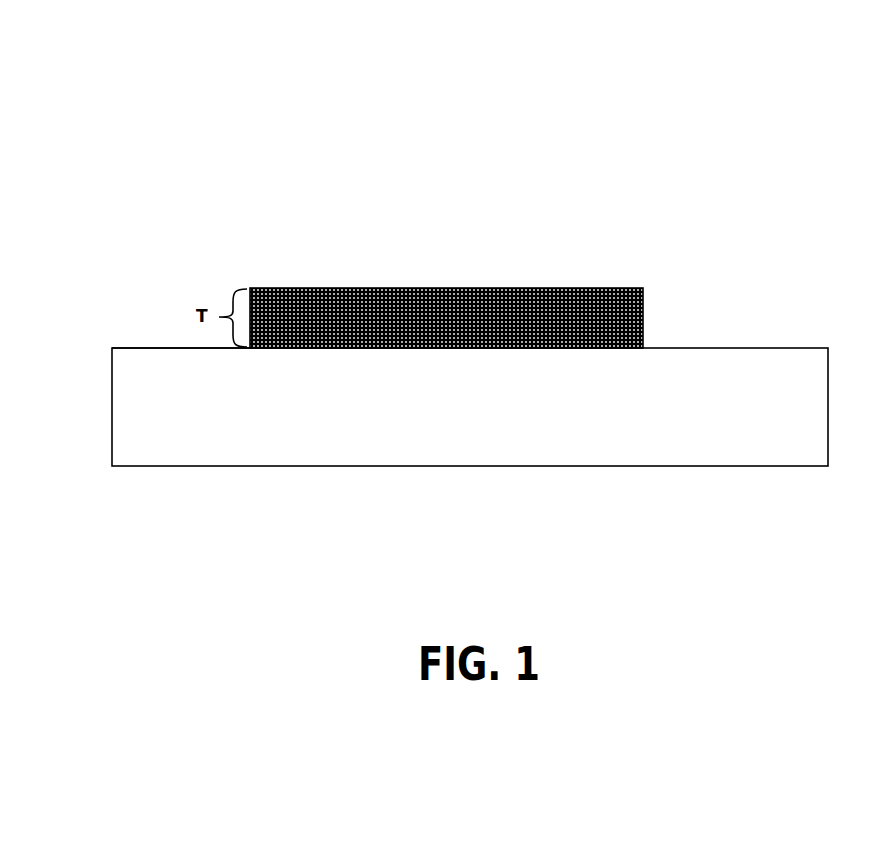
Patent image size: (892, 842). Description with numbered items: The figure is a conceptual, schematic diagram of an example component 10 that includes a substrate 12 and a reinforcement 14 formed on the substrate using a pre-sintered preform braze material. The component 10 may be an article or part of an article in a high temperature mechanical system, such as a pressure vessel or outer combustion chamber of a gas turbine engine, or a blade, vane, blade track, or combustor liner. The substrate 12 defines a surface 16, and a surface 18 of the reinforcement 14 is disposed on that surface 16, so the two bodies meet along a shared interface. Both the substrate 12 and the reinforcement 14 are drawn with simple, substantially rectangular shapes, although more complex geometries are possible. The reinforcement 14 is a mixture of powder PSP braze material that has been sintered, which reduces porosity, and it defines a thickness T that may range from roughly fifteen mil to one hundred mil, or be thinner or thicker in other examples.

The component 10 is at (189, 97).
The substrate 12 is at (160, 422).
The reinforcement 14 is at (634, 307).
The surface 16 is at (130, 348).
The surface 18 is at (610, 348).